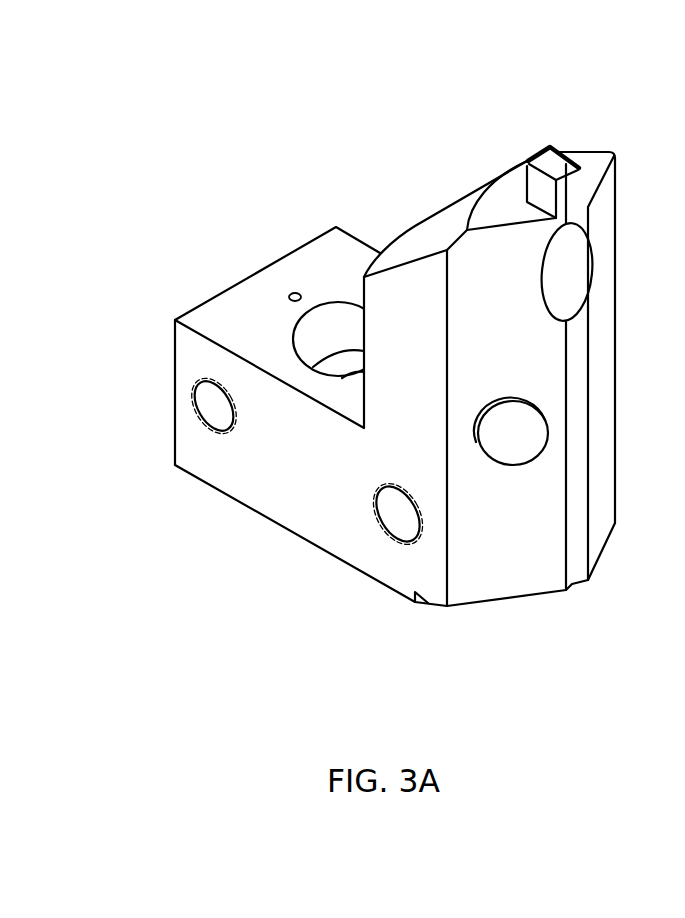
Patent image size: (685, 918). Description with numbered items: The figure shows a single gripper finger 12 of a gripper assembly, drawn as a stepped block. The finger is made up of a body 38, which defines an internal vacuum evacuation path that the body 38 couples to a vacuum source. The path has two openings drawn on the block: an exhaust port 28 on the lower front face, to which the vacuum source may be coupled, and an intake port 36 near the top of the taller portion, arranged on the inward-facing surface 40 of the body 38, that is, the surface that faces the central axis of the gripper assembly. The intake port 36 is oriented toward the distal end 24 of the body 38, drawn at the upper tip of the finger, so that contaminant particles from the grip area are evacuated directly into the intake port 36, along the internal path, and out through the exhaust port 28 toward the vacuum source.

The gripper finger 12 is at (318, 44).
The distal end 24 is at (537, 192).
The exhaust port 28 is at (395, 518).
The intake port 36 is at (572, 250).
The body 38 is at (333, 483).
The inward-facing surface 40 is at (572, 467).